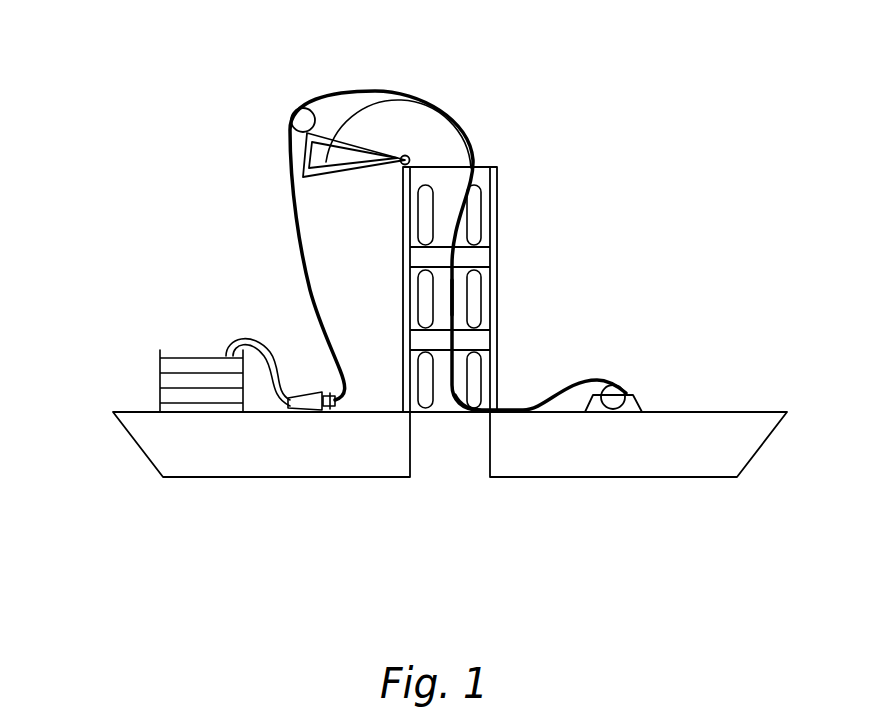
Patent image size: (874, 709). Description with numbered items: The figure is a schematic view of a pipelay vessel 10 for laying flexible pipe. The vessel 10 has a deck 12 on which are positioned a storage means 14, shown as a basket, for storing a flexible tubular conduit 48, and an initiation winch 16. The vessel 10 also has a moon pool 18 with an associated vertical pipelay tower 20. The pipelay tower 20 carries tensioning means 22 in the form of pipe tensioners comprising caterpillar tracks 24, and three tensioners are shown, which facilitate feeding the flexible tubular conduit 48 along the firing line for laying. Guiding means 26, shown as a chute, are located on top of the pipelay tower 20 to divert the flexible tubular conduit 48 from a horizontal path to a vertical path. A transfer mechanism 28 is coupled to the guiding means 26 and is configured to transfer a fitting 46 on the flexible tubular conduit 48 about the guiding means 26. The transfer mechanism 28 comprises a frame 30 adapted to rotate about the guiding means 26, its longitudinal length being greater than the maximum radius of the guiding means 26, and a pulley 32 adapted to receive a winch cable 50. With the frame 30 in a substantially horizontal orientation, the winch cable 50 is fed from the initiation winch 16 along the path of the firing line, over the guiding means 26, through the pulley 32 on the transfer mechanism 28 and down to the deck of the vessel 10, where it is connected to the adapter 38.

The pipelay vessel 10 is at (92, 118).
The deck 12 is at (125, 410).
The storage means 14 is at (155, 380).
The initiation winch 16 is at (640, 392).
The moon pool 18 is at (463, 453).
The pipelay tower 20 is at (497, 223).
The tensioning means 22 is at (427, 373).
The caterpillar tracks 24 is at (483, 378).
The guiding means 26 is at (475, 143).
The transfer mechanism 28 is at (277, 160).
The frame 30 is at (333, 182).
The pulley 32 is at (310, 110).
The adapter 38 is at (327, 414).
The fitting 46 is at (300, 412).
The flexible tubular conduit 48 is at (237, 338).
The winch cable 50 is at (453, 297).